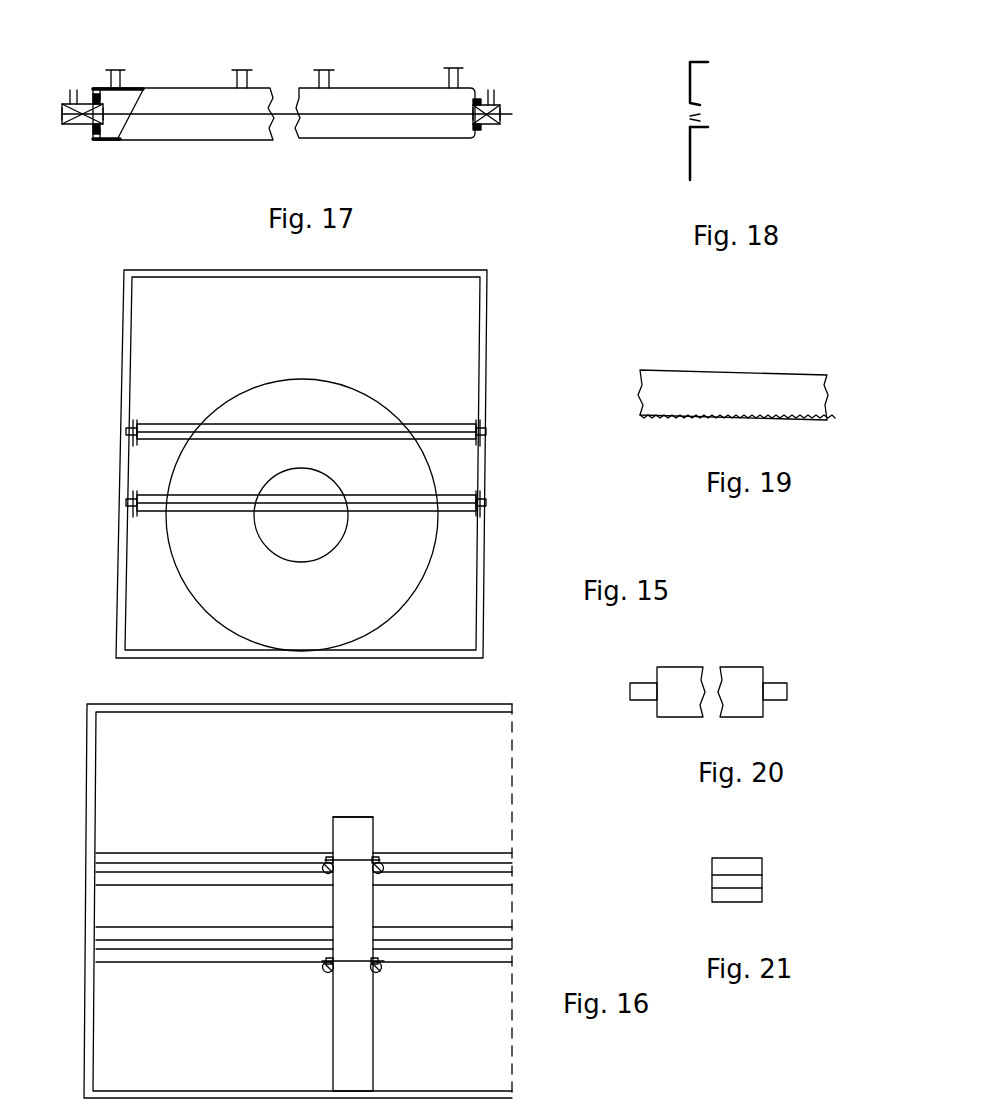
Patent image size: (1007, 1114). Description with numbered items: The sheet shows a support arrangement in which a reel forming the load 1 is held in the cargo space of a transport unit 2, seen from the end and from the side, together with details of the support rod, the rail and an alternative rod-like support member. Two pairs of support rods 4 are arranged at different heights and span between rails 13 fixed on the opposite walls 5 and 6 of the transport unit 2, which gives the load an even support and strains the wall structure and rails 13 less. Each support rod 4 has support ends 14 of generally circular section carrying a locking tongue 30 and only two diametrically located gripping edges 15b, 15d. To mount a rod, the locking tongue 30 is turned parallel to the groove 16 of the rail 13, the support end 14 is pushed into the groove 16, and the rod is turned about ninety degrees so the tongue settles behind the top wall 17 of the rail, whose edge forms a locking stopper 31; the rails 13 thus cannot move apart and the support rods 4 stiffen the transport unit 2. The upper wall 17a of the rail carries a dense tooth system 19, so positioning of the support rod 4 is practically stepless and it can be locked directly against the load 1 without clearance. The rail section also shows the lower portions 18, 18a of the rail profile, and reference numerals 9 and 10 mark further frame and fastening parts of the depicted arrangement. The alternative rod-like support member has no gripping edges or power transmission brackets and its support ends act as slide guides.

In FIG. 15, the load 1 is at (343, 395).
In FIG. 16, the load 1 is at (345, 1027).
In FIG. 15, the transport unit 2 is at (163, 272).
In FIG. 17, the support rod 4 is at (212, 125).
In FIG. 15, the support rod 4 is at (160, 440).
In FIG. 20, the support rod 4 is at (714, 653).
In FIG. 21, the support rod 4 is at (757, 843).
In FIG. 16, the support rod 4 is at (328, 862).
In FIG. 15, the wall 5 is at (480, 593).
In FIG. 15, the wall 6 is at (120, 595).
In FIG. 15, the hub / post 9 is at (408, 422).
In FIG. 16, the hub / post 9 is at (350, 860).
In FIG. 17, the fastener / pin 10 is at (455, 72).
In FIG. 15, the fastener / pin 10 is at (138, 420).
In FIG. 16, the fastener / pin 10 is at (326, 862).
In FIG. 18, the rail 13 is at (664, 202).
In FIG. 15, the rail 13 is at (130, 430).
In FIG. 16, the rail 13 is at (420, 830).
In FIG. 17, the support end 14 is at (80, 126).
In FIG. 15, the support end 14 is at (128, 432).
In FIG. 20, the support end 14 is at (645, 686).
In FIG. 21, the support end 14 is at (722, 882).
In FIG. 17, the gripping edge 15b is at (85, 130).
In FIG. 17, the gripping edge 15d is at (83, 90).
In FIG. 18, the groove 16 is at (690, 121).
In FIG. 16, the groove 16 is at (502, 866).
In FIG. 18, the top wall 17 is at (690, 82).
In FIG. 19, the top wall 17 is at (684, 382).
In FIG. 16, the top wall 17 is at (110, 858).
In FIG. 18, the upper wall 17a is at (692, 117).
In FIG. 19, the upper wall 17a is at (660, 418).
In FIG. 16, the upper wall 17a is at (465, 866).
In FIG. 18, the lower strip 18 is at (690, 160).
In FIG. 16, the lower strip 18 is at (118, 872).
In FIG. 18, the lower strip edge 18a is at (692, 124).
In FIG. 16, the lower strip edge 18a is at (443, 868).
In FIG. 19, the tooth system 19 is at (695, 418).
In FIG. 17, the locking tongue 30 is at (74, 100).
In FIG. 18, the locking stopper 31 is at (703, 108).